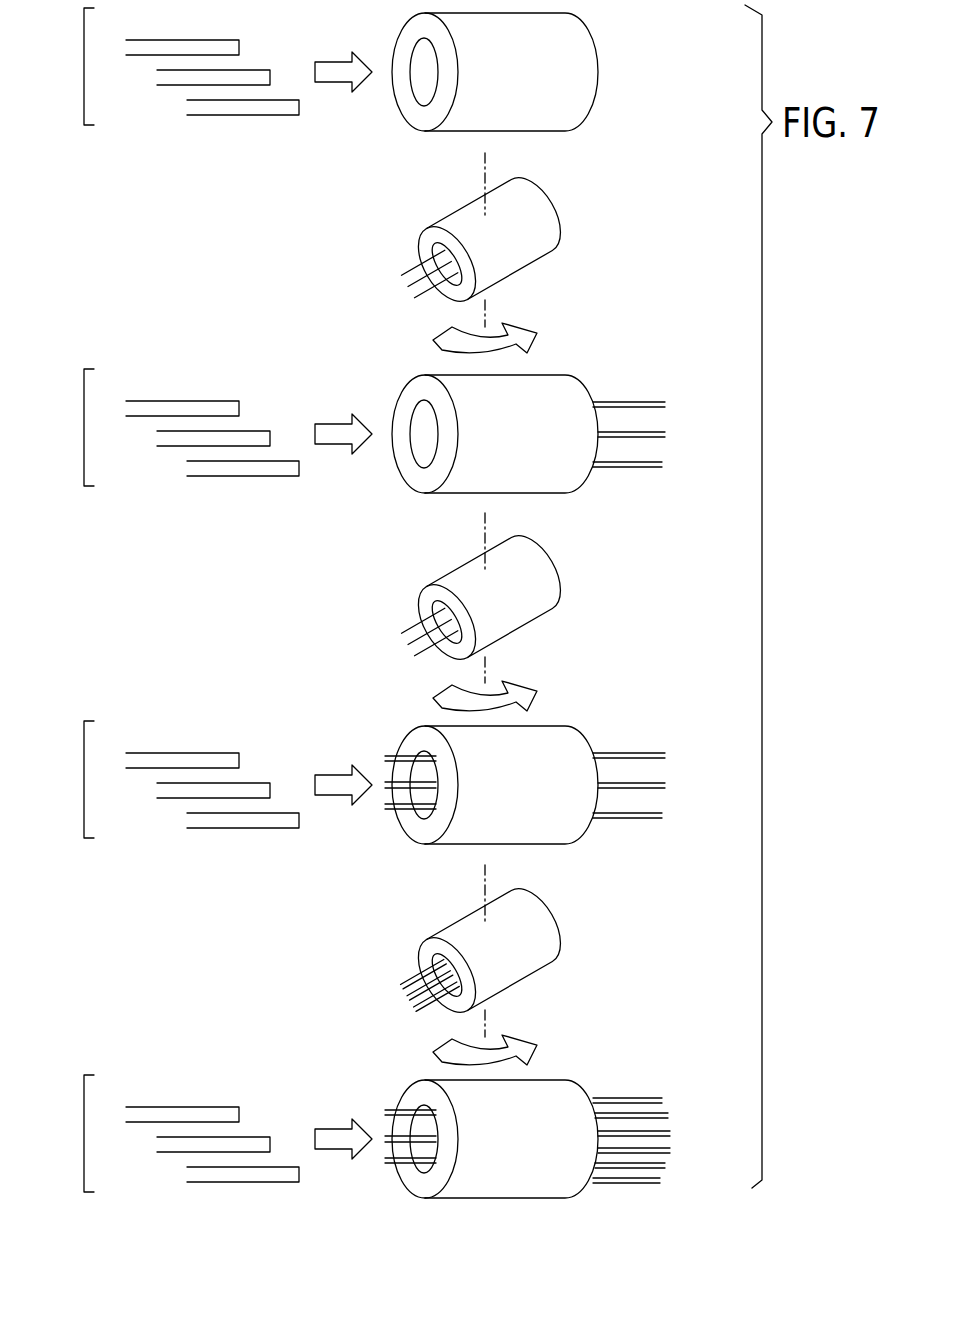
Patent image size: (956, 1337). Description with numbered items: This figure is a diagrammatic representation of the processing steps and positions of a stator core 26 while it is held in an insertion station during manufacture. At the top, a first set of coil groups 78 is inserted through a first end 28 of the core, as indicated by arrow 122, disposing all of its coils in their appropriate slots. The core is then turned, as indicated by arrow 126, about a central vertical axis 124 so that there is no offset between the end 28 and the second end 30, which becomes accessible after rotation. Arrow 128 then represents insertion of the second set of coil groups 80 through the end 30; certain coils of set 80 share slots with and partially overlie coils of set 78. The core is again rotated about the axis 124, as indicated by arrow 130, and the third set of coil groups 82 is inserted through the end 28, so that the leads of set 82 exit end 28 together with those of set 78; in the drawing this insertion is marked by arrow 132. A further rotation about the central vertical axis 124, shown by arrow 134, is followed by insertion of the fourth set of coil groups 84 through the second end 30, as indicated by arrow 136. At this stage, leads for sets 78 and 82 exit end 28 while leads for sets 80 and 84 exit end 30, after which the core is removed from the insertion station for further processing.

The core 26 is at (582, 60).
The first end 28 is at (413, 110).
The second end 30 is at (413, 472).
The first set of coil groups 78 is at (84, 68).
The second set of coil groups 80 is at (84, 429).
The third set of coil groups 82 is at (84, 781).
The fourth set of coil groups 84 is at (84, 1133).
The arrow 122 is at (335, 72).
The central vertical axis 124 is at (485, 155).
The arrow 126 is at (538, 339).
The arrow 128 is at (335, 433).
The arrow 130 is at (540, 697).
The insertion of third lead group 132 is at (335, 785).
The arrow 134 is at (540, 1051).
The arrow 136 is at (337, 1139).